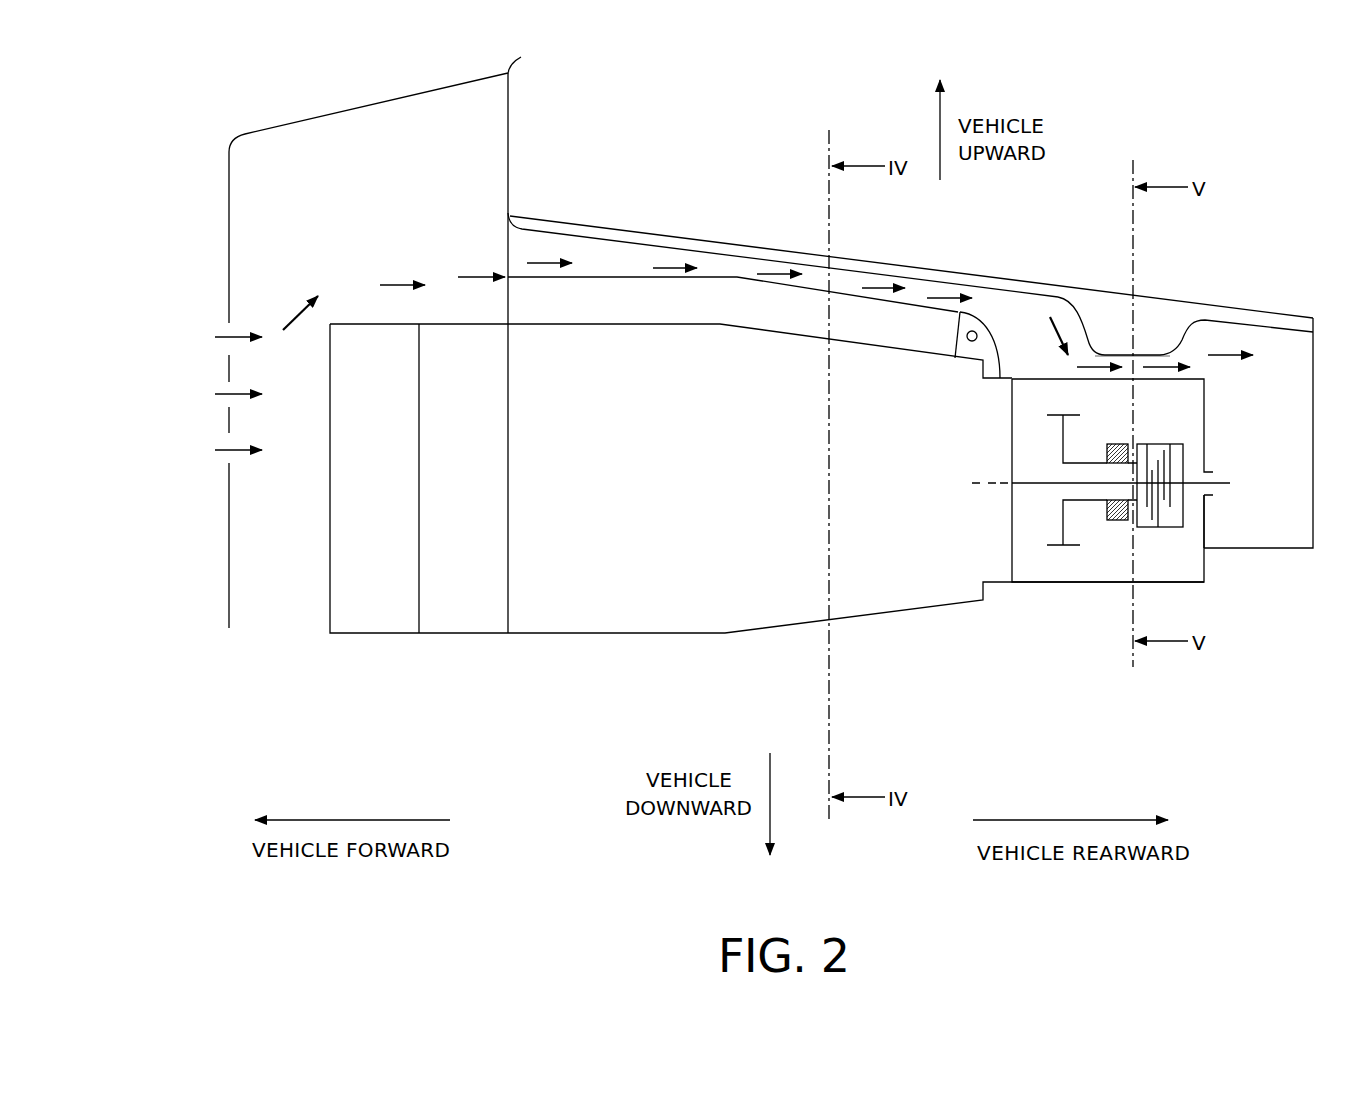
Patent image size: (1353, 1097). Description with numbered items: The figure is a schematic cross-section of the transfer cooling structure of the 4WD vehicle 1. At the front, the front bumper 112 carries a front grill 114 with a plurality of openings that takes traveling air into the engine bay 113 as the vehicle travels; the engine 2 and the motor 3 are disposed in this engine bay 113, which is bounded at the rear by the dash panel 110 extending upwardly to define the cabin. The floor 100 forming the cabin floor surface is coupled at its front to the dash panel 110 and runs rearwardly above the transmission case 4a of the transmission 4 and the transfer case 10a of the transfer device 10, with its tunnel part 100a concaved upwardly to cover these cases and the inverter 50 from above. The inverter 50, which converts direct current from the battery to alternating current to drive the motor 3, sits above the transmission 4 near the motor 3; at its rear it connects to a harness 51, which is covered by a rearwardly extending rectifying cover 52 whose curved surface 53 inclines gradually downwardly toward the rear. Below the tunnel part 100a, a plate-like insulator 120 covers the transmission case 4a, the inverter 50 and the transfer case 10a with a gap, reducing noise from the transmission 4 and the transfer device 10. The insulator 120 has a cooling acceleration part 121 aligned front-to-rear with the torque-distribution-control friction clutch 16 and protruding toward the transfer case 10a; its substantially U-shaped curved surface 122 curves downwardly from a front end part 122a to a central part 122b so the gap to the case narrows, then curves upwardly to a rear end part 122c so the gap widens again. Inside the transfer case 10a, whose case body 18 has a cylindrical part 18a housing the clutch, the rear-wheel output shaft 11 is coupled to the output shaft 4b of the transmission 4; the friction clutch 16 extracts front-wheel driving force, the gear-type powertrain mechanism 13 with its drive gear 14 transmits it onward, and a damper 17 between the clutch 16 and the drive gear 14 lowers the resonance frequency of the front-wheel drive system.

The 4WD vehicle 1 is at (1135, 140).
The engine 2 is at (372, 323).
The motor 3 is at (450, 323).
The transmission 4 is at (670, 635).
The transmission case 4a is at (535, 635).
The output shaft 4b is at (992, 478).
The transfer device 10 is at (1207, 568).
The transfer case 10a is at (1207, 520).
The rear-wheel output shaft 11 is at (1222, 480).
The powertrain mechanism 13 is at (1065, 407).
The drive gear 14 is at (1072, 412).
The torque-distribution-control friction clutch 16 is at (1158, 443).
The damper 17 is at (1112, 522).
The case body 18 is at (1100, 584).
The cylindrical part 18a is at (1040, 584).
The inverter 50 is at (603, 276).
The harness 51 is at (985, 315).
The rectifying cover 52 is at (995, 339).
The curved surface 53 is at (997, 330).
The floor 100 is at (658, 232).
The tunnel part 100a is at (735, 247).
The dash panel 110 is at (513, 128).
The front bumper 112 is at (228, 235).
The engine bay 113 is at (285, 170).
The front grill 114 is at (228, 368).
The insulator 120 is at (882, 272).
The cooling acceleration part 121 is at (1108, 352).
The curved surface 122 is at (1166, 286).
The front end part 122a is at (1068, 287).
The central part 122b is at (1137, 350).
The rear end part 122c is at (1213, 320).